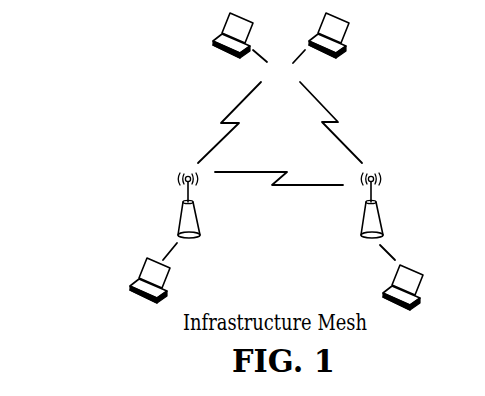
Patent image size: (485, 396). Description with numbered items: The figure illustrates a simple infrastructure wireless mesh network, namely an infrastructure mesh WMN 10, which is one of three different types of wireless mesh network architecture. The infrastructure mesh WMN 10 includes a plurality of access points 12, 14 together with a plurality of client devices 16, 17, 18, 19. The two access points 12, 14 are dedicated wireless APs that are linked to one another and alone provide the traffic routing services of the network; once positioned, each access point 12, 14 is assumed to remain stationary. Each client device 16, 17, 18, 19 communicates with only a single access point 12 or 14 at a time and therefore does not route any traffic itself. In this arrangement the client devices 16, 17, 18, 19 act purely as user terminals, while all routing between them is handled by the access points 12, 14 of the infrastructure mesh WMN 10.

The infrastructure mesh WMN 10 is at (122, 136).
The access point 12 is at (178, 220).
The access point 14 is at (380, 215).
The client device 16 is at (140, 298).
The client device 17 is at (417, 310).
The client device 18 is at (217, 51).
The client device 19 is at (342, 51).